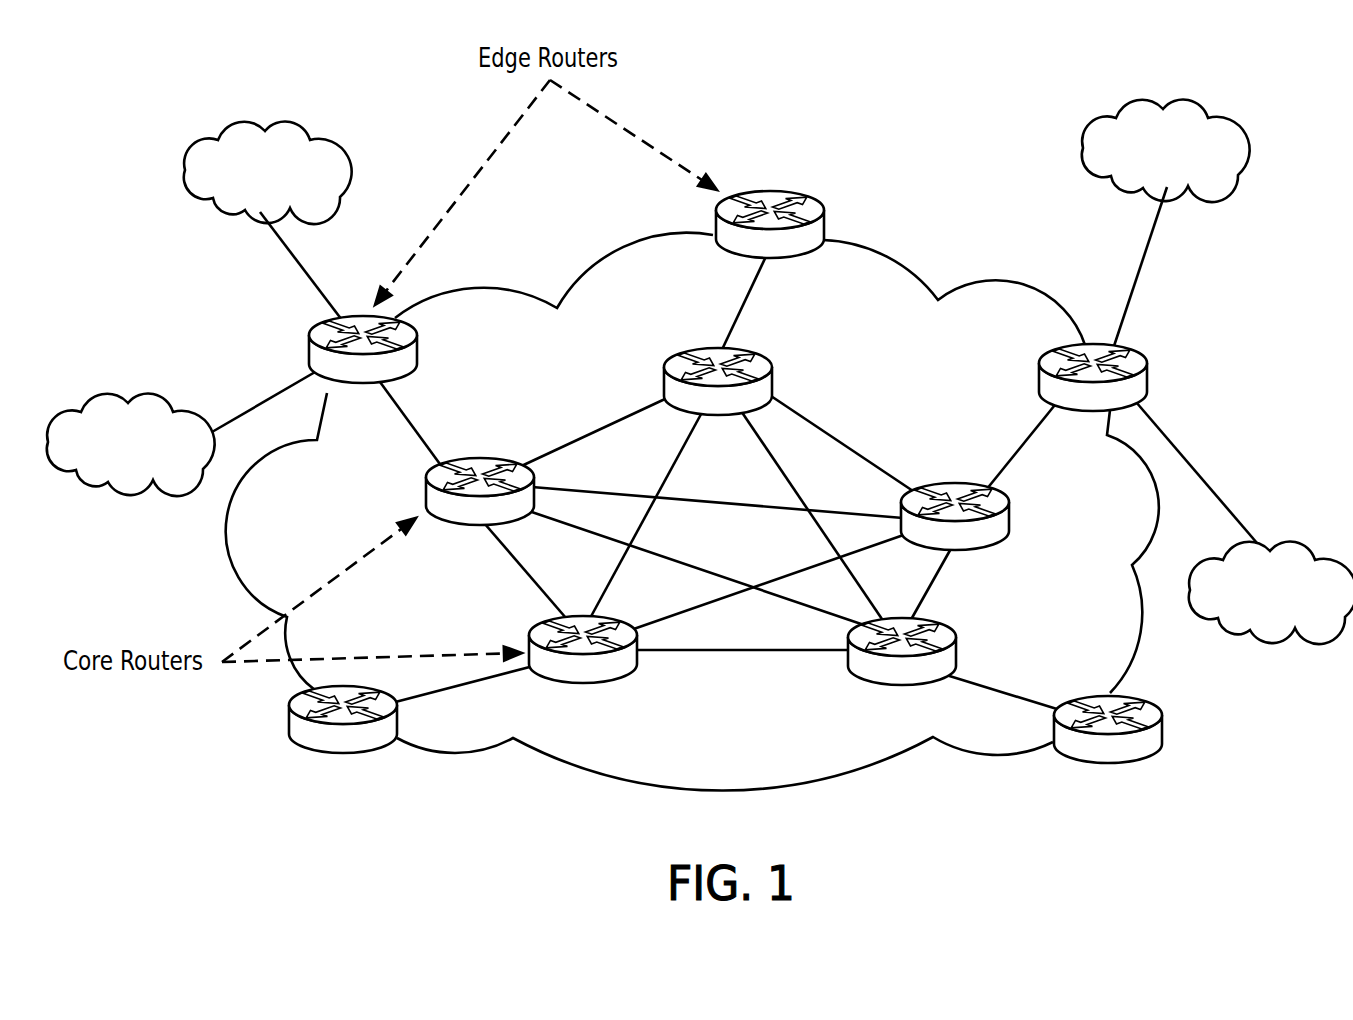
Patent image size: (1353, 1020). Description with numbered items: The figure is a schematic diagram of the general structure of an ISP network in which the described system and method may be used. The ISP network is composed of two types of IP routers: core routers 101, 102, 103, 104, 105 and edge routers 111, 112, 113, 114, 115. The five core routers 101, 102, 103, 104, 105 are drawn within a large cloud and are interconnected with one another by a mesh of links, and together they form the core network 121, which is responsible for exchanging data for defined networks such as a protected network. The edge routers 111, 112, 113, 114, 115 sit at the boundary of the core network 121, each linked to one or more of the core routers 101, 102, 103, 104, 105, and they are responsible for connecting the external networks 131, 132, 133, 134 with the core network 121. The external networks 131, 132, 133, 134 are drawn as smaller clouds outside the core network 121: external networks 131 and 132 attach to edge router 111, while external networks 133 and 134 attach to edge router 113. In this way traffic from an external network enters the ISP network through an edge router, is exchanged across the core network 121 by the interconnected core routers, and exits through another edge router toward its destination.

The core router 101 is at (482, 456).
The core router 102 is at (771, 357).
The core router 103 is at (950, 486).
The core router 104 is at (957, 650).
The core router 105 is at (550, 684).
The edge router 111 is at (308, 347).
The edge router 112 is at (768, 188).
The edge router 113 is at (1147, 380).
The edge router 114 is at (1107, 764).
The edge router 115 is at (342, 754).
The core network 121 is at (876, 740).
The external network 131 is at (108, 487).
The external network 132 is at (185, 168).
The external network 133 is at (1237, 172).
The external network 134 is at (1290, 633).